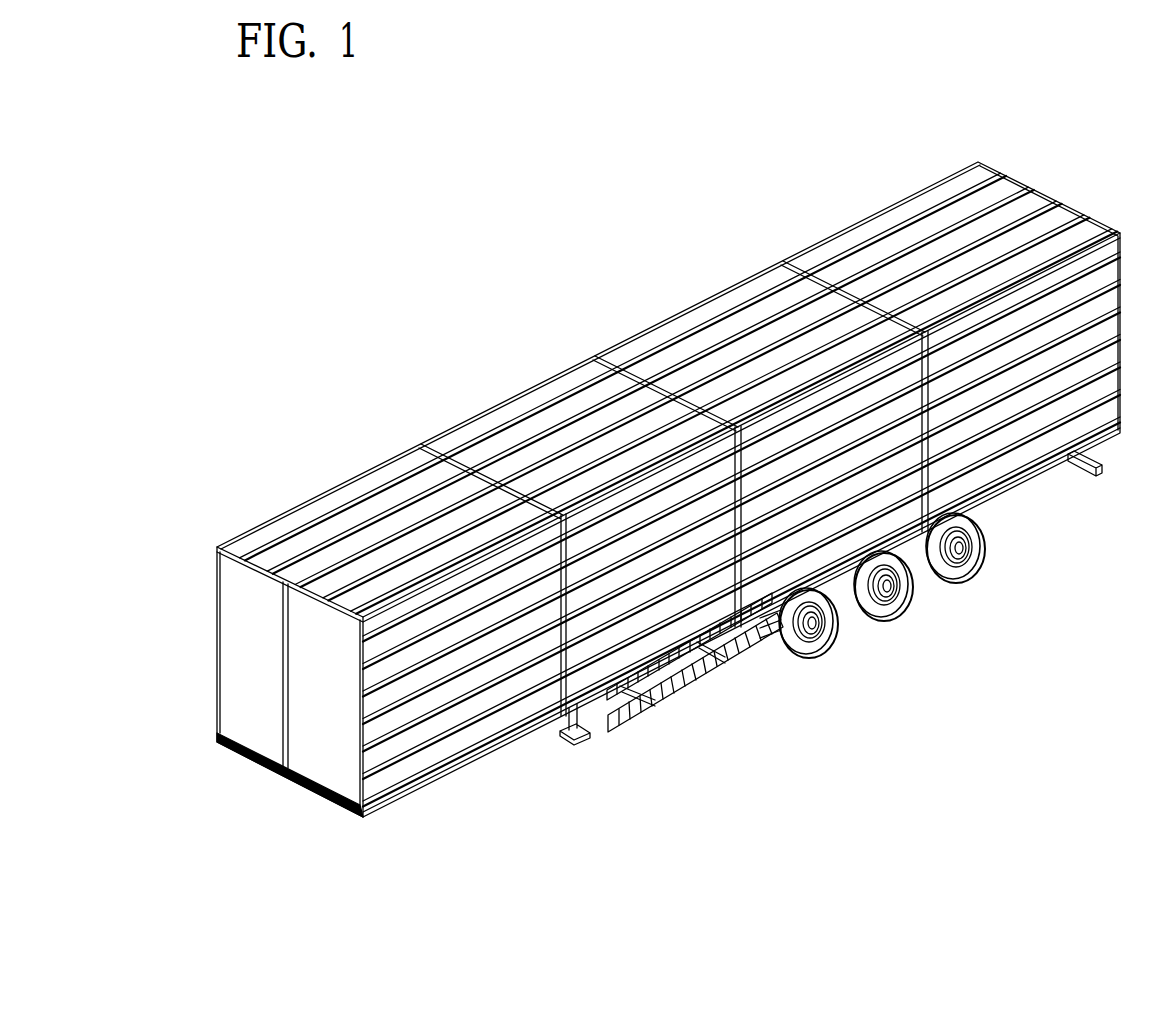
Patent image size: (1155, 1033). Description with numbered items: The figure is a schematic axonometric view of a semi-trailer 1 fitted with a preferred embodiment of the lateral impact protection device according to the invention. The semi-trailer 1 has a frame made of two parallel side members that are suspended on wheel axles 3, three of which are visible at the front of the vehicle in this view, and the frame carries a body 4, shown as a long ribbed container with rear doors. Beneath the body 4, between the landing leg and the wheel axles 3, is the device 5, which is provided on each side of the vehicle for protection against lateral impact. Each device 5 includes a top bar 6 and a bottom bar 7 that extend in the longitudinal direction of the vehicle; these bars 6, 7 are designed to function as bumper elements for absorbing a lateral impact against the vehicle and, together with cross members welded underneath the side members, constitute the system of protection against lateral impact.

The semi-trailer 1 is at (566, 275).
The wheel axles 3 is at (815, 628).
The body 4 is at (418, 712).
The device 5 is at (688, 701).
The top bar 6 is at (610, 712).
The bottom bar 7 is at (655, 703).